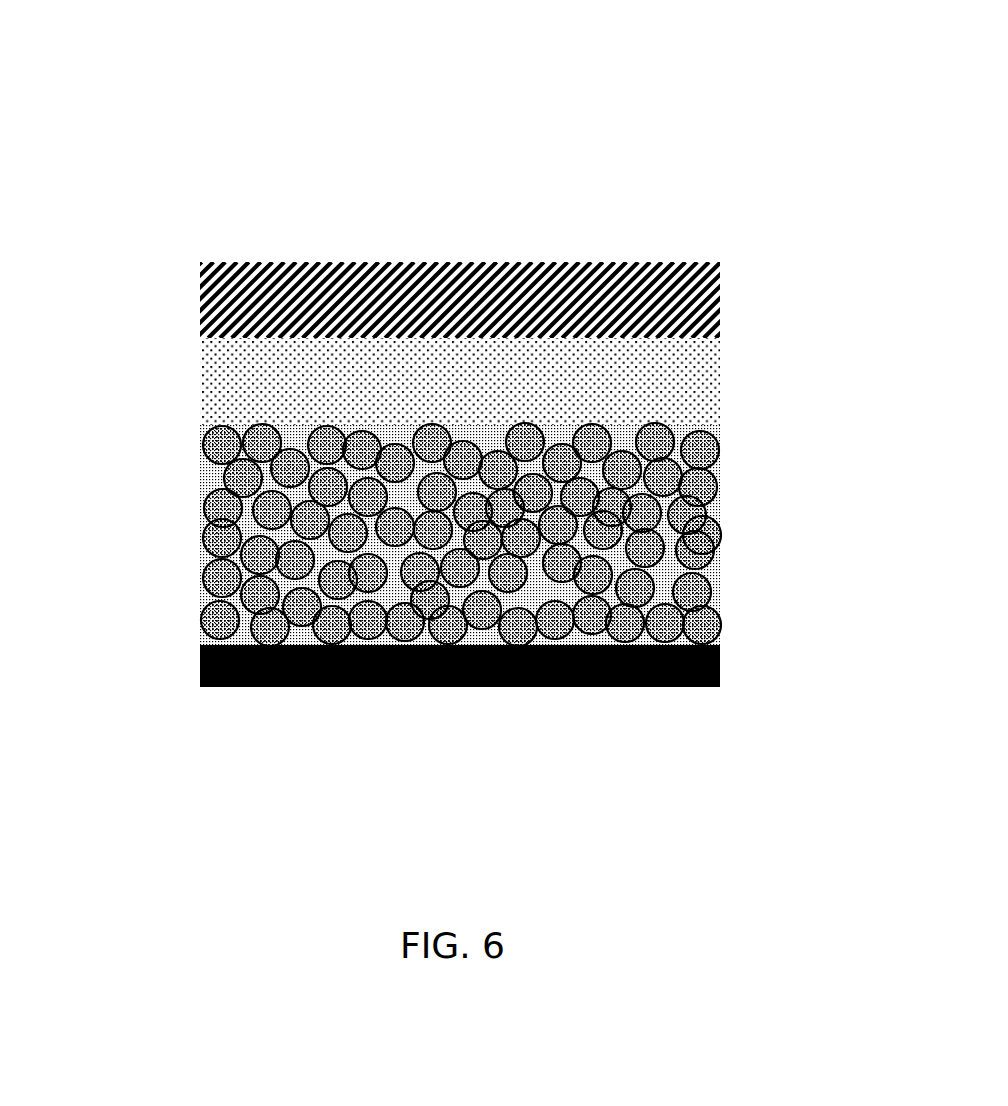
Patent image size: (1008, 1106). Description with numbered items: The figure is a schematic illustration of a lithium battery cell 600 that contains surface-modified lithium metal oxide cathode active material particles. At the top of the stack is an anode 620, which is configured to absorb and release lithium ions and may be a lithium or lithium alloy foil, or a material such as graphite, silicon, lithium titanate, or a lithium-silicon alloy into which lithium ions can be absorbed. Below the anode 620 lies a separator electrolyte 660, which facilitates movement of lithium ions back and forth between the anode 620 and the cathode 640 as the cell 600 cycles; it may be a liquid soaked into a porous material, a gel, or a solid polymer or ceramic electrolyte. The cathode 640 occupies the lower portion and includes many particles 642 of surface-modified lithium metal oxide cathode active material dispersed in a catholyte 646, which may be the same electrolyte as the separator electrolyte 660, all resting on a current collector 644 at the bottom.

The lithium battery cell 600 is at (268, 190).
The anode 620 is at (240, 325).
The separator electrolyte 660 is at (686, 380).
The cathode 640 is at (485, 539).
The catholyte 646 is at (722, 507).
The particles 642 is at (515, 532).
The current collector 644 is at (235, 673).